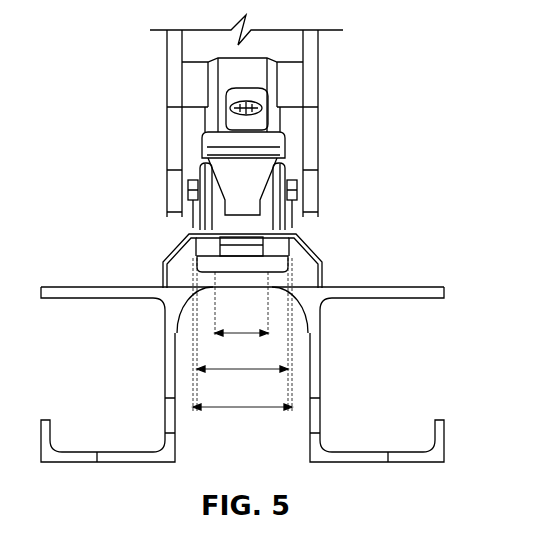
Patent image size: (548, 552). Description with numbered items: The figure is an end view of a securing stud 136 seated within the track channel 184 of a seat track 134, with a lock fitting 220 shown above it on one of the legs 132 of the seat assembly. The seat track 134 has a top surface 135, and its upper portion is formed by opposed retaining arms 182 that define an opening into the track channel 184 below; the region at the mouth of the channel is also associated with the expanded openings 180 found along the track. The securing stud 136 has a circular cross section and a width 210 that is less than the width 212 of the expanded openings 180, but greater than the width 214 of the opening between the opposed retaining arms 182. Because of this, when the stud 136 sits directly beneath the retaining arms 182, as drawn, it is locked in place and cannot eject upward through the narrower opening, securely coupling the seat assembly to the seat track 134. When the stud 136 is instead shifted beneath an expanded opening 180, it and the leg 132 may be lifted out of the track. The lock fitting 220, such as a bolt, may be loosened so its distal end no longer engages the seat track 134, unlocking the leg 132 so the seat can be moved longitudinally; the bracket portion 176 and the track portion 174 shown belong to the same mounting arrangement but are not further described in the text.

The leg 132 is at (320, 57).
The lock fitting 220 is at (255, 103).
The retaining arm 182 is at (207, 243).
The mounting bracket 176 is at (180, 248).
The top surface 135 is at (296, 238).
The track channel 184 is at (284, 241).
The seat track 134 is at (153, 308).
The securing stud 136 is at (210, 287).
The right channel rail 174 is at (408, 300).
The expanded opening 180 is at (208, 246).
The width of the opening between retaining arms 214 is at (245, 334).
The width of securing stud 210 is at (245, 370).
The width of expanded opening 212 is at (242, 408).